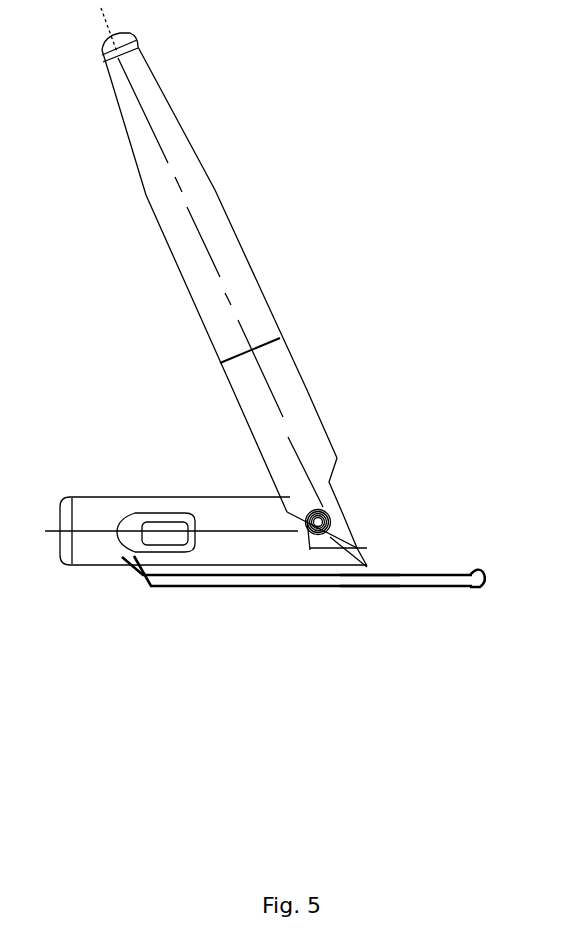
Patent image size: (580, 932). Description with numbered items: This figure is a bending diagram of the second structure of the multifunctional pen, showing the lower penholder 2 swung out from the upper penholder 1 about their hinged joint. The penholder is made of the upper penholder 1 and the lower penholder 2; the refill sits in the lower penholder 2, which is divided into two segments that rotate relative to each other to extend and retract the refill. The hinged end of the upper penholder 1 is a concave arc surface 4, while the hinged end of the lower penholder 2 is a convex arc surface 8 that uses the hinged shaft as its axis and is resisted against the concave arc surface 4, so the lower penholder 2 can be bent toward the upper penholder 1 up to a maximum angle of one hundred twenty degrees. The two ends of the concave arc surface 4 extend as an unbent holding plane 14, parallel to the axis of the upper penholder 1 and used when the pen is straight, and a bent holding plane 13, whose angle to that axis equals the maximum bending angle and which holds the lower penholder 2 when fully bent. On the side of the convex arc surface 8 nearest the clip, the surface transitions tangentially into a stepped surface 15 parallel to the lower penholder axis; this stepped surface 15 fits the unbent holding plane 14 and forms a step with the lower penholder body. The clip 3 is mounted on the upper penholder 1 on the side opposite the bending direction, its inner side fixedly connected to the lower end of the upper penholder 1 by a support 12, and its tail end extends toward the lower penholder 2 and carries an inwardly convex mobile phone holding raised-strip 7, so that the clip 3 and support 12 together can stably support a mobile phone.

The upper penholder 1 is at (133, 497).
The lower penholder 2 is at (240, 265).
The clip 3 is at (253, 590).
The concave arc surface 4 is at (322, 590).
The mobile phone holding raised-strip 7 is at (477, 563).
The convex arc surface 8 is at (350, 516).
The support 12 is at (357, 590).
The bent holding plane 13 is at (286, 511).
The unbent holding plane 14 is at (348, 545).
The stepped surface 15 is at (335, 490).